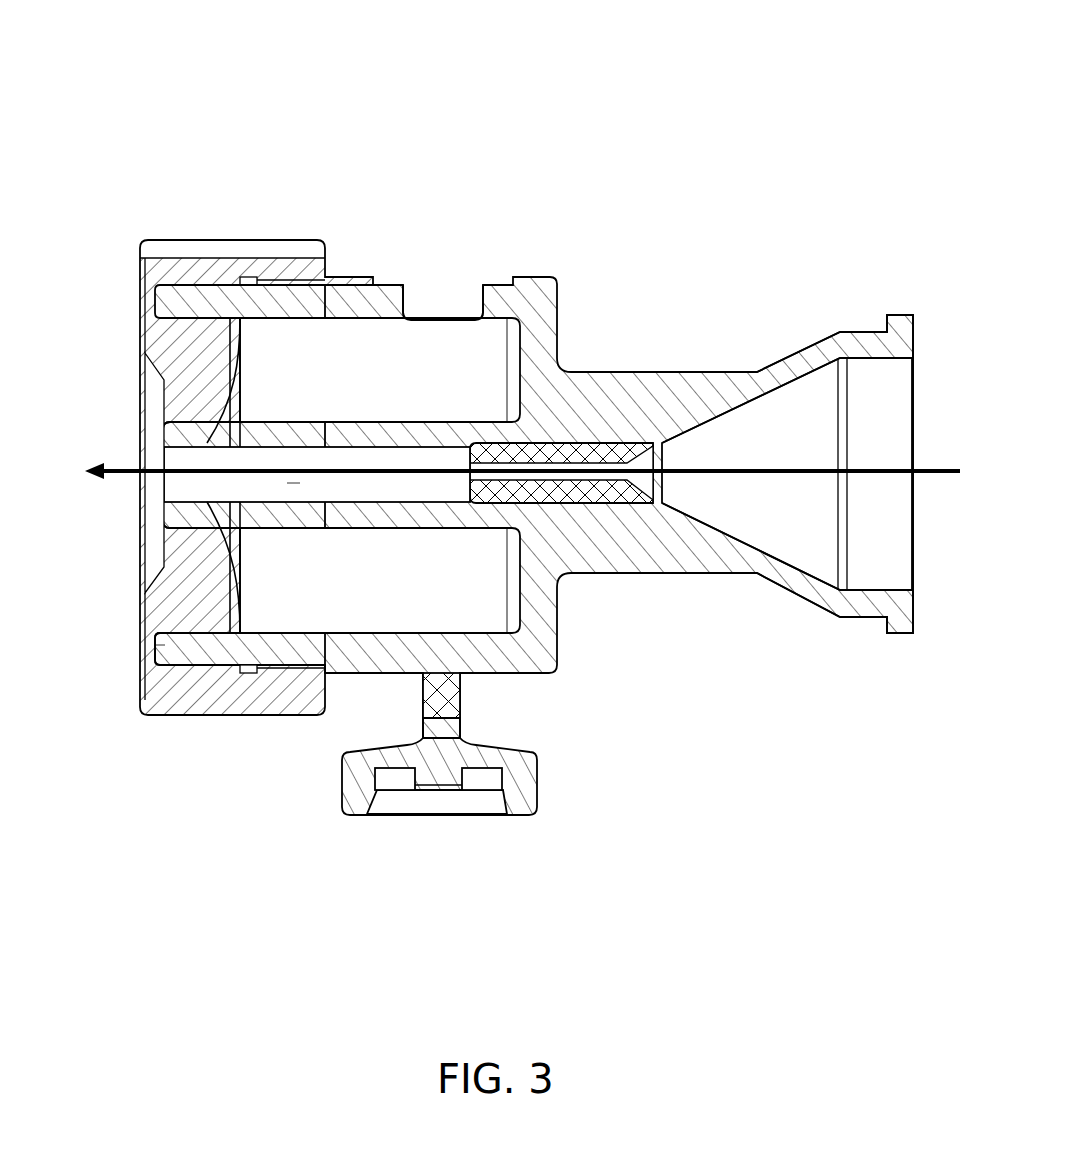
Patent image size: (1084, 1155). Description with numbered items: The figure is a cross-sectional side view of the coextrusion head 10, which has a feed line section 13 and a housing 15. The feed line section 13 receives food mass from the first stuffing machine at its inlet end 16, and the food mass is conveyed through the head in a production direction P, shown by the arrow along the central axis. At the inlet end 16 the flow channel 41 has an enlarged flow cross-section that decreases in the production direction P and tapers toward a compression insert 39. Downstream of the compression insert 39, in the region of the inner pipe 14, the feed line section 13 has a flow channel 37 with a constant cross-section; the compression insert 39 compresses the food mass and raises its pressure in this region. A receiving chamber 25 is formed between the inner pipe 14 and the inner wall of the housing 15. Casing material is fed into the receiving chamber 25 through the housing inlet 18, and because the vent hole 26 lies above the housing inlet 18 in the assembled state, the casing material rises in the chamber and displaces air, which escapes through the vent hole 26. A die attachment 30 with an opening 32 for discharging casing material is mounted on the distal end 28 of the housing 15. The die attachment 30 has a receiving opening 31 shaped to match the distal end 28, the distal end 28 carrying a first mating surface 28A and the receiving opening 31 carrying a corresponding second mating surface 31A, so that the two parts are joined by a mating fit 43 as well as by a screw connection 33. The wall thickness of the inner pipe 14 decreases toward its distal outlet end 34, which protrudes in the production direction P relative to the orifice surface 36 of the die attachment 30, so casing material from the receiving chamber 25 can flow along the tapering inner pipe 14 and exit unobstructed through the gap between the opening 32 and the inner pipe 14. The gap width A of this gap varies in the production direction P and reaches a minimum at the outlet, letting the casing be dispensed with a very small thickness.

The coextrusion head 10 is at (708, 195).
The feed line section 13 is at (722, 350).
The inner pipe 14 is at (447, 437).
The housing 15 is at (352, 270).
The inlet end 16 is at (883, 603).
The housing inlet 18 is at (525, 800).
The receiving chamber 25 is at (457, 600).
The vent hole 26 is at (422, 300).
The distal end 28 is at (190, 650).
The first mating surface 28A is at (163, 675).
The die attachment 30 is at (141, 222).
The receiving opening 31 is at (240, 690).
The second mating surface 31A is at (165, 680).
The opening 32 is at (167, 402).
The screw connection 33 is at (333, 675).
The distal outlet end 34 is at (160, 453).
The orifice surface 36 is at (137, 380).
The flow channel 37 is at (287, 483).
The compression insert 39 is at (568, 495).
The flow channel 41 is at (807, 537).
The mating fit 43 is at (266, 190).
The gap width A is at (222, 425).
The production direction P is at (128, 478).